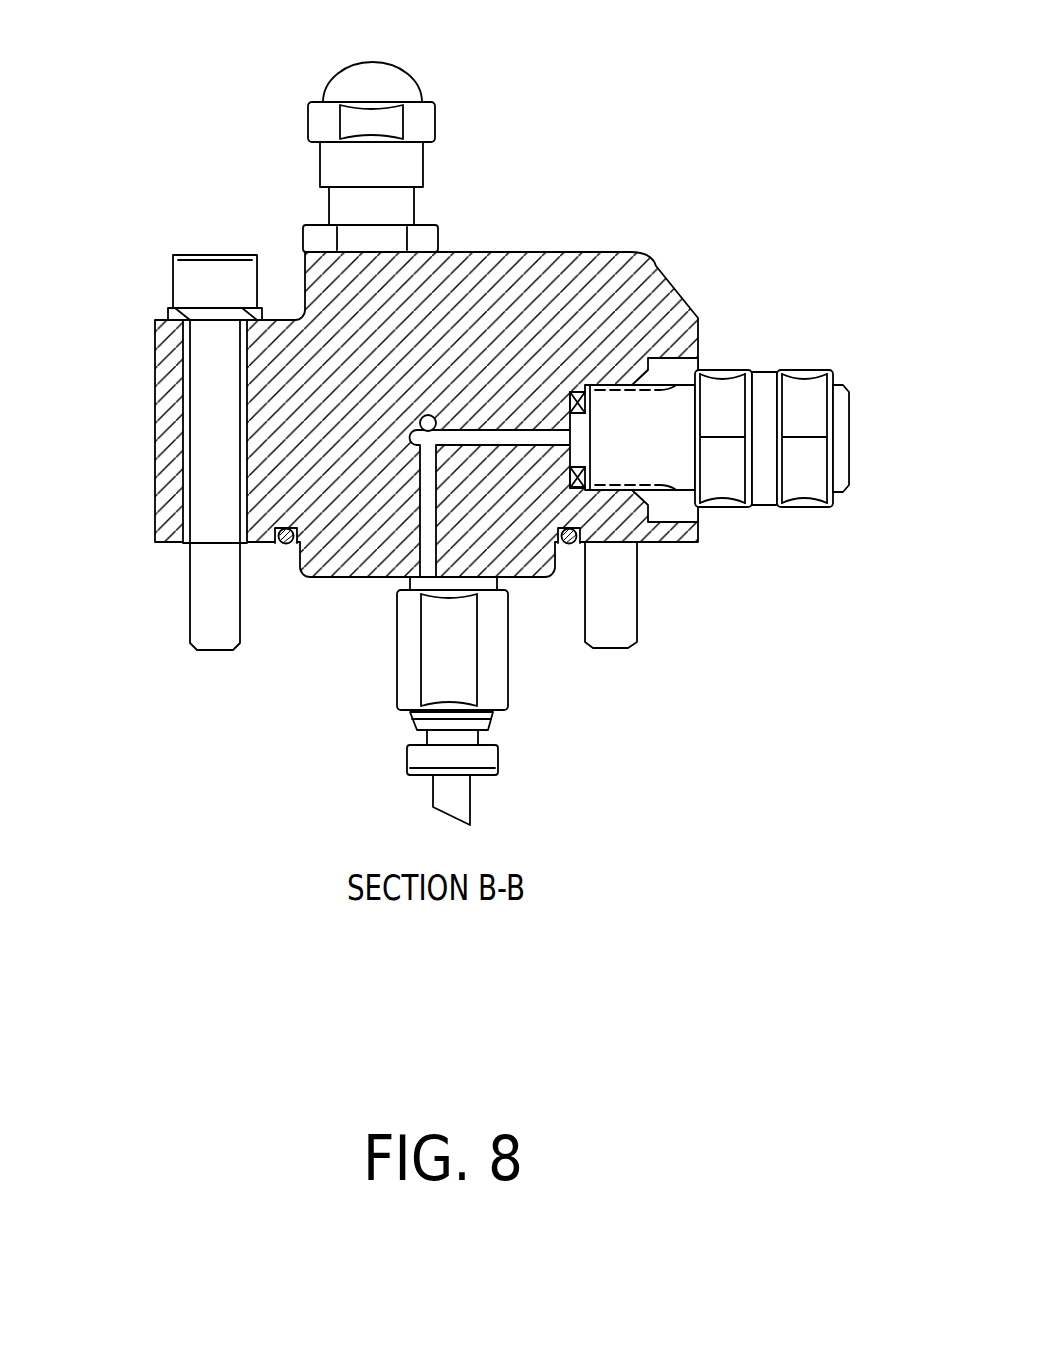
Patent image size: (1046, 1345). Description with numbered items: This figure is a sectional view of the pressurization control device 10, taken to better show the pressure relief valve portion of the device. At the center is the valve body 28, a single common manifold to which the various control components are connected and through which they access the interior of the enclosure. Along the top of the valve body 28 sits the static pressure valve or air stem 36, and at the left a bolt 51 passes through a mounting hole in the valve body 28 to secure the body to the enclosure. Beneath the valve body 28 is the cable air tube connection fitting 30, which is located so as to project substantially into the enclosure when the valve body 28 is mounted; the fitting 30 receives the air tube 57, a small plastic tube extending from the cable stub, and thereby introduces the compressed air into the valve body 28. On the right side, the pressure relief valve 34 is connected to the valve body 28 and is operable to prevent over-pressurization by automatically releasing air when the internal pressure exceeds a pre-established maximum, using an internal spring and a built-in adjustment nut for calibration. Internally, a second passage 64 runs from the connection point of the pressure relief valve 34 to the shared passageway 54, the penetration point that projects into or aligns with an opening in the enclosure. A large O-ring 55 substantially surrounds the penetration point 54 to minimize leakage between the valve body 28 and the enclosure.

The device 10 is at (475, 433).
The valve body 28 is at (553, 288).
The cable air tube connection fitting 30 is at (543, 697).
The pressure relief valve 34 is at (765, 542).
The static pressure valve 36 is at (468, 115).
The bolt 51 is at (167, 597).
The shared passageway 54 is at (425, 528).
The large O-ring 55 is at (283, 547).
The air tube 57 is at (450, 795).
The second passage 64 is at (535, 437).